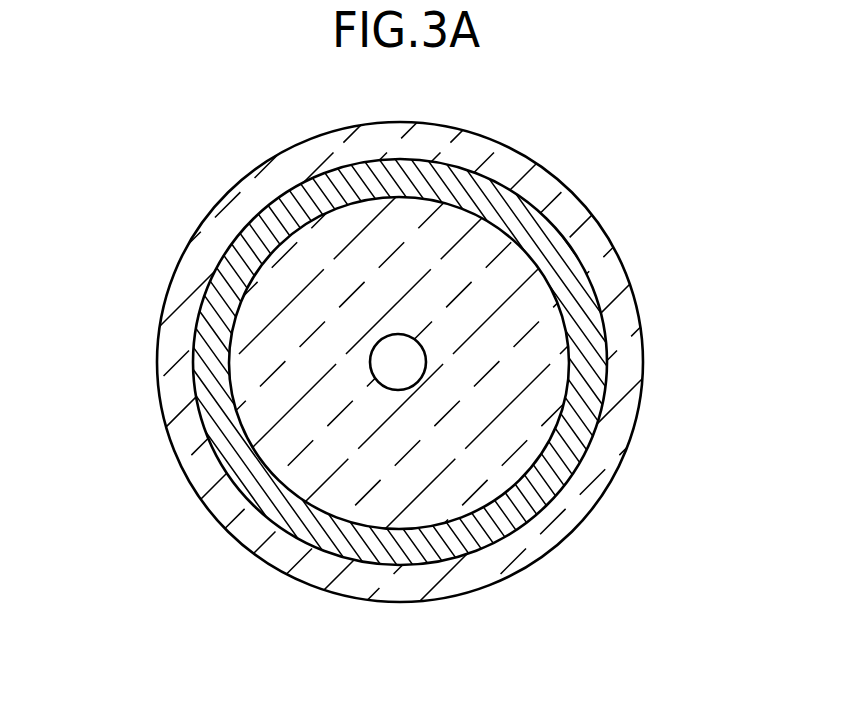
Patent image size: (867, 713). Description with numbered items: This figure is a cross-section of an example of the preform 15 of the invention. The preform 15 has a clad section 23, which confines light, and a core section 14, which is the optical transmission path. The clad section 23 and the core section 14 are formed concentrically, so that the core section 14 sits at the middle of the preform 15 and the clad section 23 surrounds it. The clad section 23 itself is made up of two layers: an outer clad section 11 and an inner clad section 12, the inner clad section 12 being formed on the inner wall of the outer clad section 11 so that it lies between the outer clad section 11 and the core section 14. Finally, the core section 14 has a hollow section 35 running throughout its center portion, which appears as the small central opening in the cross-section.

The preform 15 is at (660, 184).
The clad section 23 is at (647, 497).
The outer clad section 11 is at (463, 587).
The inner clad section 12 is at (483, 521).
The core section 14 is at (507, 378).
The hollow section 35 is at (398, 362).